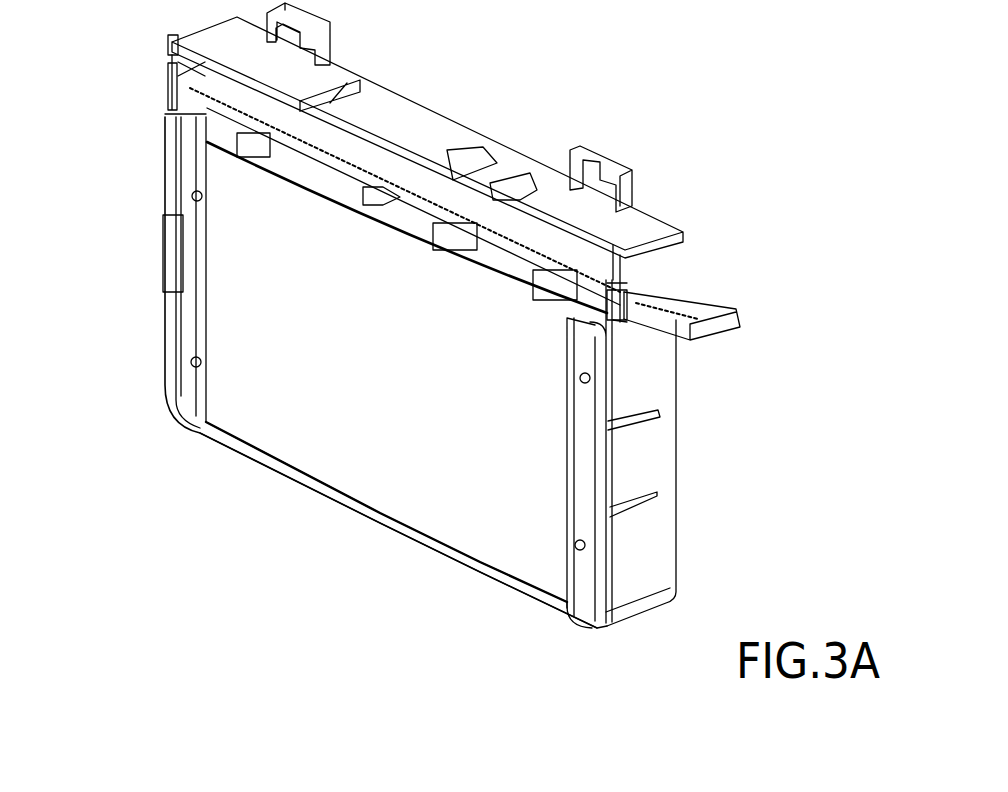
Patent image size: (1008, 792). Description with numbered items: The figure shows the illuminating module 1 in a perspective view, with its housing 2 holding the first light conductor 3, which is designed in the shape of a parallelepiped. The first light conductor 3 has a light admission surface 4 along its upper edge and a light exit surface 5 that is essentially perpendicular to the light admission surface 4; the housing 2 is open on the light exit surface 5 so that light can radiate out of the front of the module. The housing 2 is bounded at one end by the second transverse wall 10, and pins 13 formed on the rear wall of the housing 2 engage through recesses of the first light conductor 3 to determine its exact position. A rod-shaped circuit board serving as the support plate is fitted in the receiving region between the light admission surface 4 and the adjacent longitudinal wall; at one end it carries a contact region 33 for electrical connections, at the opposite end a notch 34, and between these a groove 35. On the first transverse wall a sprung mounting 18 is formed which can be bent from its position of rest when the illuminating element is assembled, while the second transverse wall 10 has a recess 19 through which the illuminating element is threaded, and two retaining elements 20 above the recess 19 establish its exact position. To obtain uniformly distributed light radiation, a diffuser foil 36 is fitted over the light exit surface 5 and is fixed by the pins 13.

The illuminating module 1 is at (690, 95).
The housing 2 is at (168, 425).
The first light conductor 3 is at (369, 378).
The light admission surface 4 is at (403, 218).
The light exit surface 5 is at (281, 431).
The second transverse wall 10 is at (662, 582).
The pins 13 is at (197, 200).
The sprung mounting 18 is at (170, 73).
The recess 19 is at (724, 262).
The retaining elements 20 is at (640, 287).
The contact region 33 is at (707, 300).
The notch 34 is at (173, 88).
The groove 35 is at (687, 327).
The diffuser foil 36 is at (430, 513).